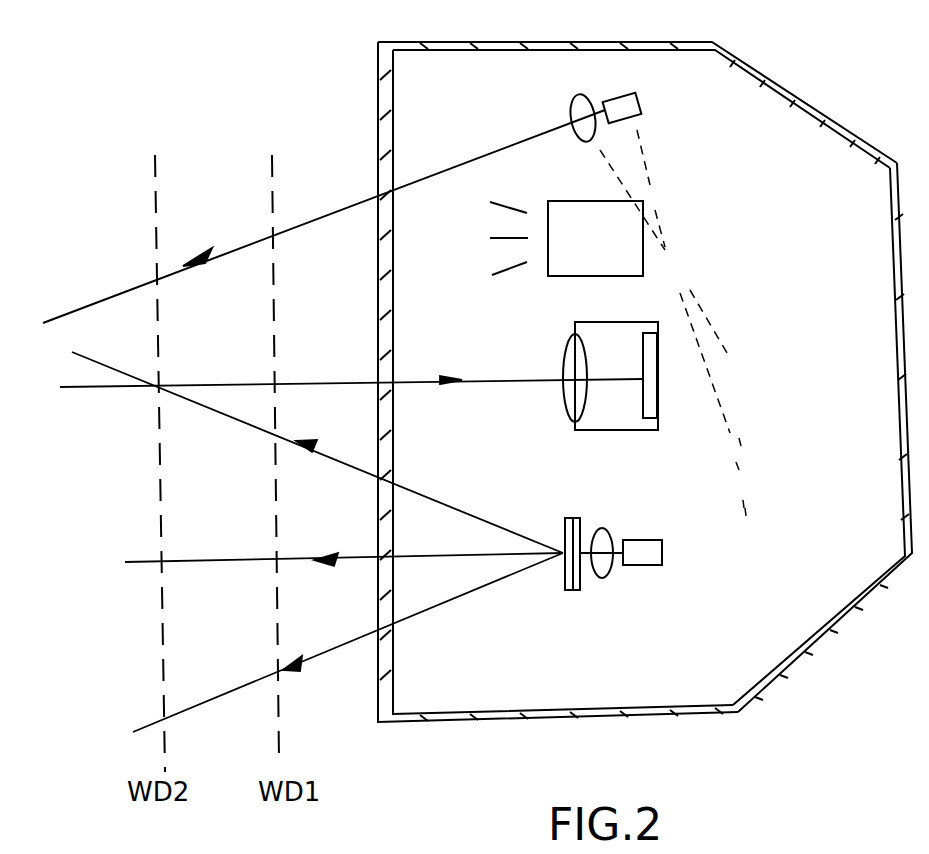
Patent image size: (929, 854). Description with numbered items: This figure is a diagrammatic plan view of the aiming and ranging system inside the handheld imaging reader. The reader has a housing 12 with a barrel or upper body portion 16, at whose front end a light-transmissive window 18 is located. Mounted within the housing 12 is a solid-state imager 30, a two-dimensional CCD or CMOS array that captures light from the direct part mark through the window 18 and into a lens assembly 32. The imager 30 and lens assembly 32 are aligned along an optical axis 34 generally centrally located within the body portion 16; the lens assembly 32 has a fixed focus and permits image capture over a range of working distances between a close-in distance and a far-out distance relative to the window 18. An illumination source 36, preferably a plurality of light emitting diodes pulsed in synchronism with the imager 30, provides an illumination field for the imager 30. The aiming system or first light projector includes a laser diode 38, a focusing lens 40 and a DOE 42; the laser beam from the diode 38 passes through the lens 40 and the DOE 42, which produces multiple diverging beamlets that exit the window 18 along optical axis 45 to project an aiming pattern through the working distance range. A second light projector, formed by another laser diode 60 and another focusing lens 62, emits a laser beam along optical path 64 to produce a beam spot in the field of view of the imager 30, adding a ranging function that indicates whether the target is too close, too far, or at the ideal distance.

The housing 12 is at (822, 631).
The body portion 16 is at (787, 93).
The window 18 is at (378, 158).
The solid-state imager 30 is at (656, 356).
The lens assembly 32 is at (571, 346).
The optical axis 34 is at (478, 382).
The illumination source 36 is at (603, 266).
The laser diode 38 is at (651, 560).
The focusing lens 40 is at (605, 568).
The DOE 42 is at (572, 518).
The optical axis 45 is at (430, 560).
The laser diode 60 is at (640, 104).
The focusing lens 62 is at (595, 137).
The optical path 64 is at (438, 173).